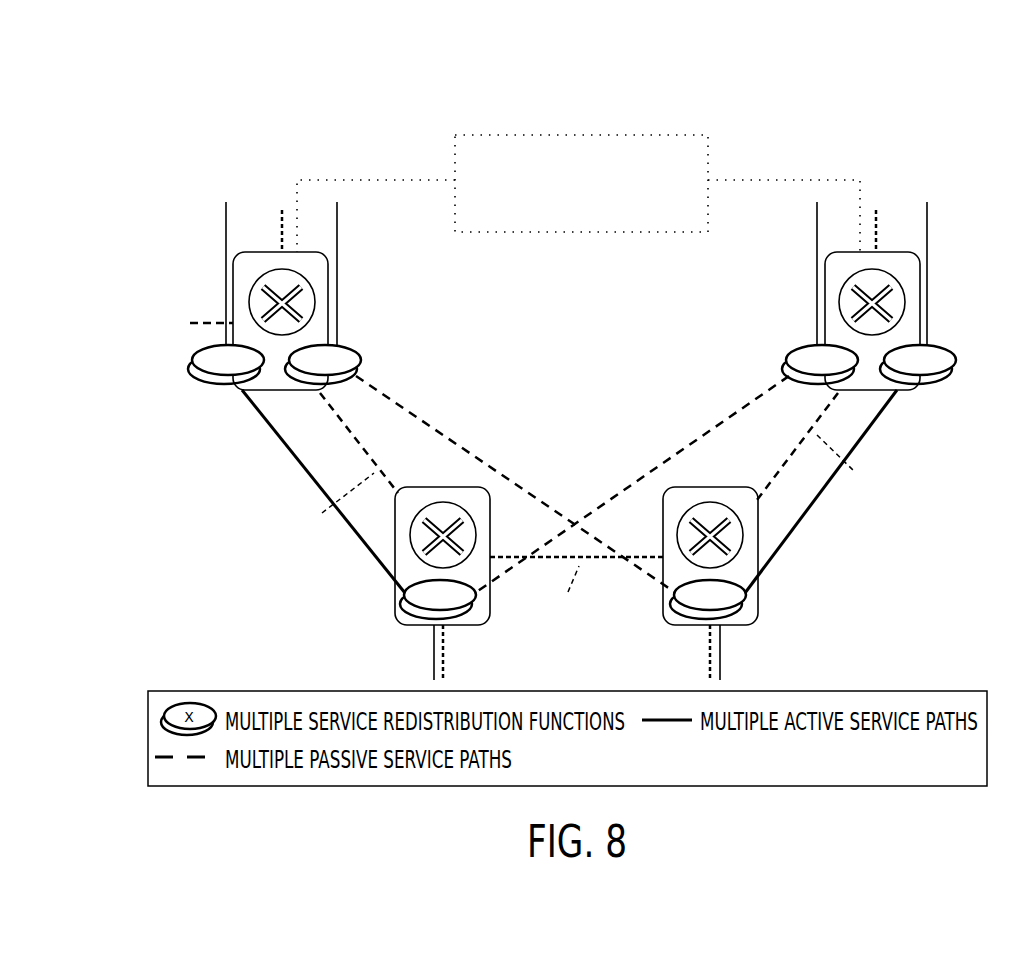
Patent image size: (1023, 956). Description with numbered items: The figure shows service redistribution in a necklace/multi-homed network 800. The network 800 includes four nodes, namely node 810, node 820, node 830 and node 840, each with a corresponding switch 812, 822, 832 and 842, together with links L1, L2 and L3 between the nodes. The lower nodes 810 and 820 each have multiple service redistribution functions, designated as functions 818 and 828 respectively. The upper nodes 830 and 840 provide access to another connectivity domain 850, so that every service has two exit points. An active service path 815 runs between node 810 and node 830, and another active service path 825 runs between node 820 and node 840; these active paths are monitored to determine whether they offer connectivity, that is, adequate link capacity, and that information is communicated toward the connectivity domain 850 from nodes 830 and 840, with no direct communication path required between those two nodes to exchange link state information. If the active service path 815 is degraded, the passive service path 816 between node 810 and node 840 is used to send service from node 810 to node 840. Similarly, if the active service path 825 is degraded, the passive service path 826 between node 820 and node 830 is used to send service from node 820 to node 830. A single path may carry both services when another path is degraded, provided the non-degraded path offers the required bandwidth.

The network 800 is at (260, 100).
The node 810 is at (443, 568).
The switch 812 is at (478, 512).
The active service path 815 is at (284, 456).
The passive service path 816 is at (686, 406).
The service redistribution function 818 is at (482, 611).
The node 820 is at (723, 583).
The switch 822 is at (743, 527).
The active service path 825 is at (870, 425).
The passive service path 826 is at (460, 405).
The service redistribution function 828 is at (668, 600).
The node 830 is at (279, 296).
The switch 832 is at (314, 292).
The node 840 is at (877, 296).
The switch 842 is at (842, 292).
The connectivity domain 850 is at (712, 146).
The link L1 is at (337, 500).
The link L2 is at (567, 594).
The link L3 is at (848, 461).